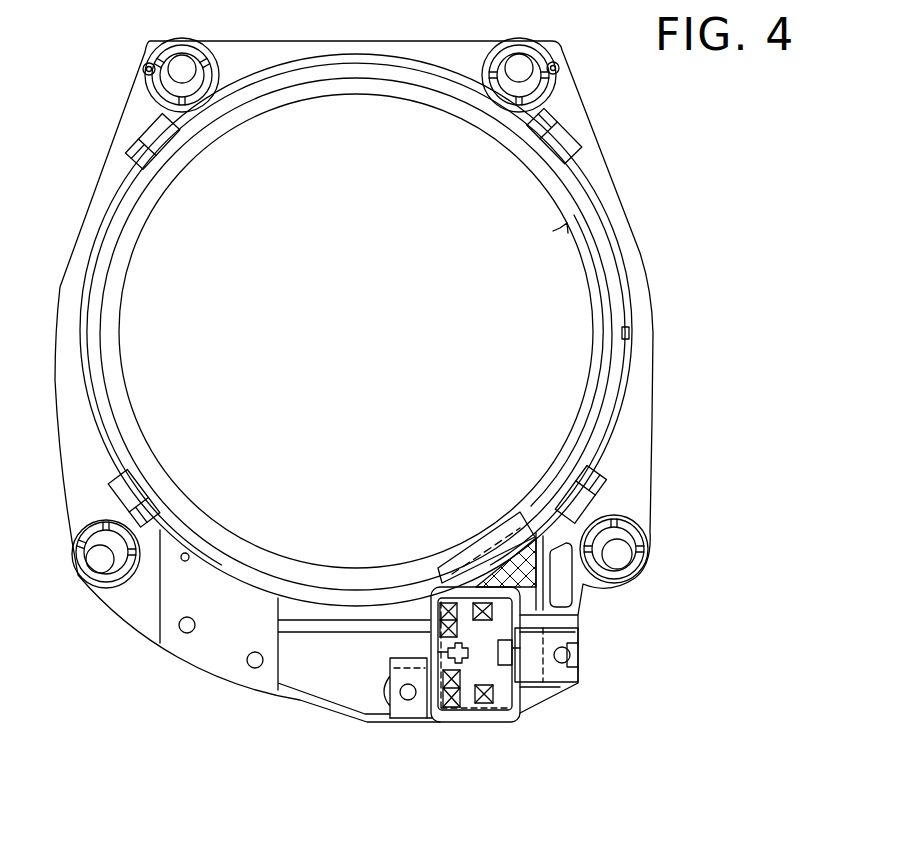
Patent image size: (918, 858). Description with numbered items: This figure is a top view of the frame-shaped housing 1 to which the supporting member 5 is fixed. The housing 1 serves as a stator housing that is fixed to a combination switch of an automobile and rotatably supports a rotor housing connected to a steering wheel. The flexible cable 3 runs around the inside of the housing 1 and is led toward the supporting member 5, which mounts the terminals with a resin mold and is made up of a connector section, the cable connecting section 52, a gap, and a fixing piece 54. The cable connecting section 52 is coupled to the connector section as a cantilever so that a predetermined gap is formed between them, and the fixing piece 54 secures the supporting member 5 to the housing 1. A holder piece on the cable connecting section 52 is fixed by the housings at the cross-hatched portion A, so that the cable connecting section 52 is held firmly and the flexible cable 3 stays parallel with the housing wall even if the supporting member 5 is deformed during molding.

The housing 1 is at (660, 477).
The flexible cable 3 is at (590, 278).
The cable connecting section 52 is at (492, 541).
The cross-hatched portion A is at (533, 573).
The supporting member 5 is at (480, 734).
The fixing piece 54 is at (568, 671).